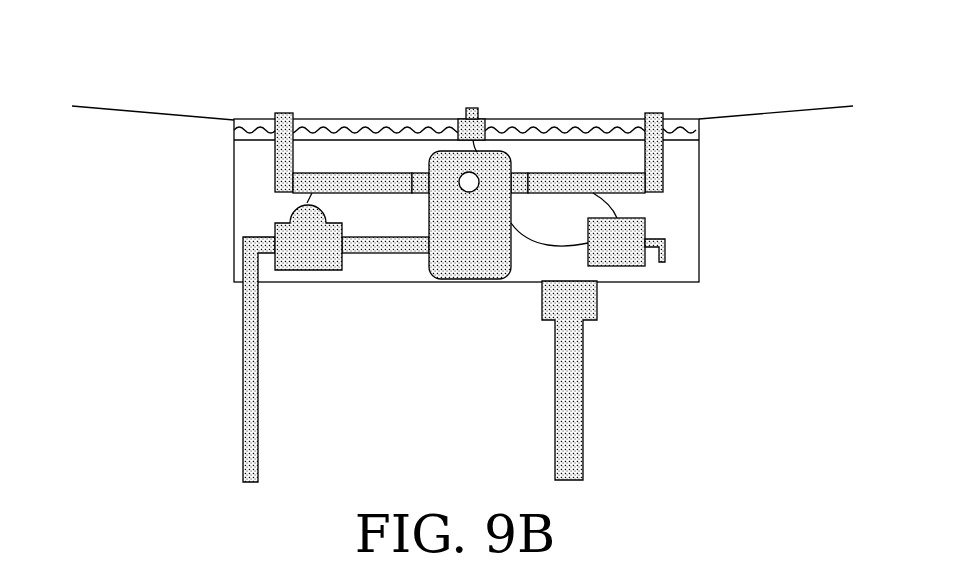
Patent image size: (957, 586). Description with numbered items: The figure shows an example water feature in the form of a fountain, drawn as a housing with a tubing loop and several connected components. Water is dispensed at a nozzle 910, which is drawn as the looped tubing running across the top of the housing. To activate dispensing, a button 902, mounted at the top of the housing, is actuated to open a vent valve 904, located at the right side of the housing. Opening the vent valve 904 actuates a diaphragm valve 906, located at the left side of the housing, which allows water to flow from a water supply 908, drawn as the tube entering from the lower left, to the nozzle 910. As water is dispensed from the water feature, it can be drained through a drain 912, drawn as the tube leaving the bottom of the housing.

The button 902 is at (473, 108).
The vent valve 904 is at (647, 222).
The diaphragm valve 906 is at (290, 213).
The water supply 908 is at (258, 355).
The nozzle 910 is at (293, 117).
The drain 912 is at (555, 392).